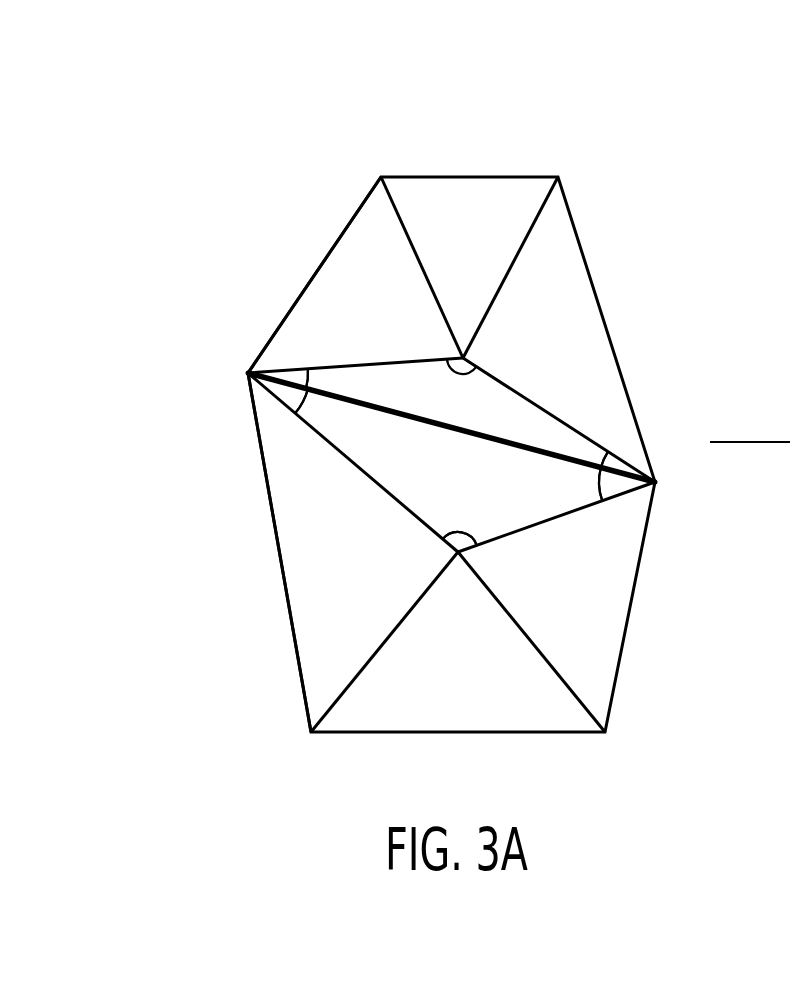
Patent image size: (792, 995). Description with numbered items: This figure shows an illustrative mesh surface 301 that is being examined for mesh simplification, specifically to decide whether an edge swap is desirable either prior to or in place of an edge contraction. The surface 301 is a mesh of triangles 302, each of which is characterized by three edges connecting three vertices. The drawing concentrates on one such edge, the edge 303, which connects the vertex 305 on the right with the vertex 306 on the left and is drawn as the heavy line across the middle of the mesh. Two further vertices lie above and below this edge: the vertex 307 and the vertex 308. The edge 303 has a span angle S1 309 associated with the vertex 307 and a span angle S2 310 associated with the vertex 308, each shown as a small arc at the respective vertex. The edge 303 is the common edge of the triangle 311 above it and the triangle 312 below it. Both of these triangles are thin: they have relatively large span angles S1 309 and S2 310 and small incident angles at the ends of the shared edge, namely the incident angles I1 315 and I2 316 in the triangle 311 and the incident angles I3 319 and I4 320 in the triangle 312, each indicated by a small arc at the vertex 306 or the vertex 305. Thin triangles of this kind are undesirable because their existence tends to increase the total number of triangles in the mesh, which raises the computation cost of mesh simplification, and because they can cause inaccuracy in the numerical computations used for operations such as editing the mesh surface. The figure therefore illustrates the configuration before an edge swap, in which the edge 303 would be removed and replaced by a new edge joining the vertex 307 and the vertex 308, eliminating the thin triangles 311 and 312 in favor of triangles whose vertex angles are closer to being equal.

The mesh surface 301 is at (232, 126).
The triangles 302 is at (357, 230).
The edge 303 is at (510, 447).
The vertex 305 is at (657, 483).
The vertex 306 is at (245, 372).
The vertex 307 is at (478, 355).
The vertex 308 is at (462, 554).
The span angle S1 309 is at (452, 378).
The span angle S2 310 is at (462, 530).
The triangle 311 is at (508, 417).
The triangle 312 is at (382, 452).
The incident angle I1 315 is at (316, 368).
The incident angle I2 316 is at (598, 460).
The incident angle I3 319 is at (310, 428).
The incident angle I4 320 is at (597, 515).
The incident angle I1 is at (287, 375).
The incident angle I2 is at (625, 455).
The incident angle I3 is at (289, 397).
The incident angle I4 is at (627, 510).
The span angle S1 is at (470, 384).
The span angle S2 is at (451, 522).